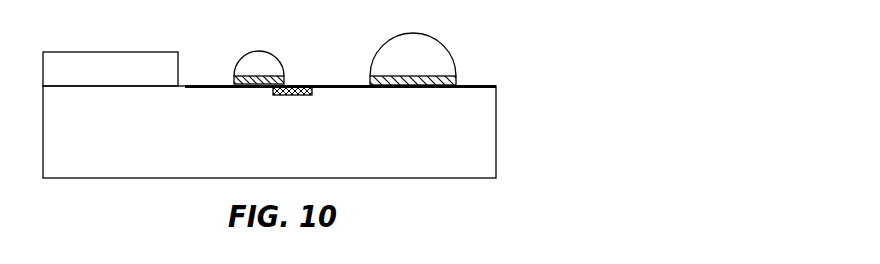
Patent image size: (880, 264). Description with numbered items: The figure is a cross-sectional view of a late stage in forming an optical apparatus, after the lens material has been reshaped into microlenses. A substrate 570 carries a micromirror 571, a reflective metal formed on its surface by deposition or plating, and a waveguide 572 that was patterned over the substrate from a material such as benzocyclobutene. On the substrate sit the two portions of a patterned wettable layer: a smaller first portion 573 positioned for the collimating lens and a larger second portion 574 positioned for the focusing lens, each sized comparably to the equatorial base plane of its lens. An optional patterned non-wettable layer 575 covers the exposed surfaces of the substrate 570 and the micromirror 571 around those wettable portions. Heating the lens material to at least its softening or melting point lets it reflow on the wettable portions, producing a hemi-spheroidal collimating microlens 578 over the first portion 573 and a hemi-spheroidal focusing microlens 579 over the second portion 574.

The substrate 570 is at (496, 137).
The micromirror 571 is at (297, 95).
The waveguide 572 is at (123, 52).
The first portion of patterned wettable layer 573 is at (250, 87).
The second portion of patterned wettable layer 574 is at (413, 87).
The patterned non-wettable layer 575 is at (201, 89).
The hemi-spheroidal collimating microlens 578 is at (277, 52).
The hemi-spheroidal focusing microlens 579 is at (439, 39).